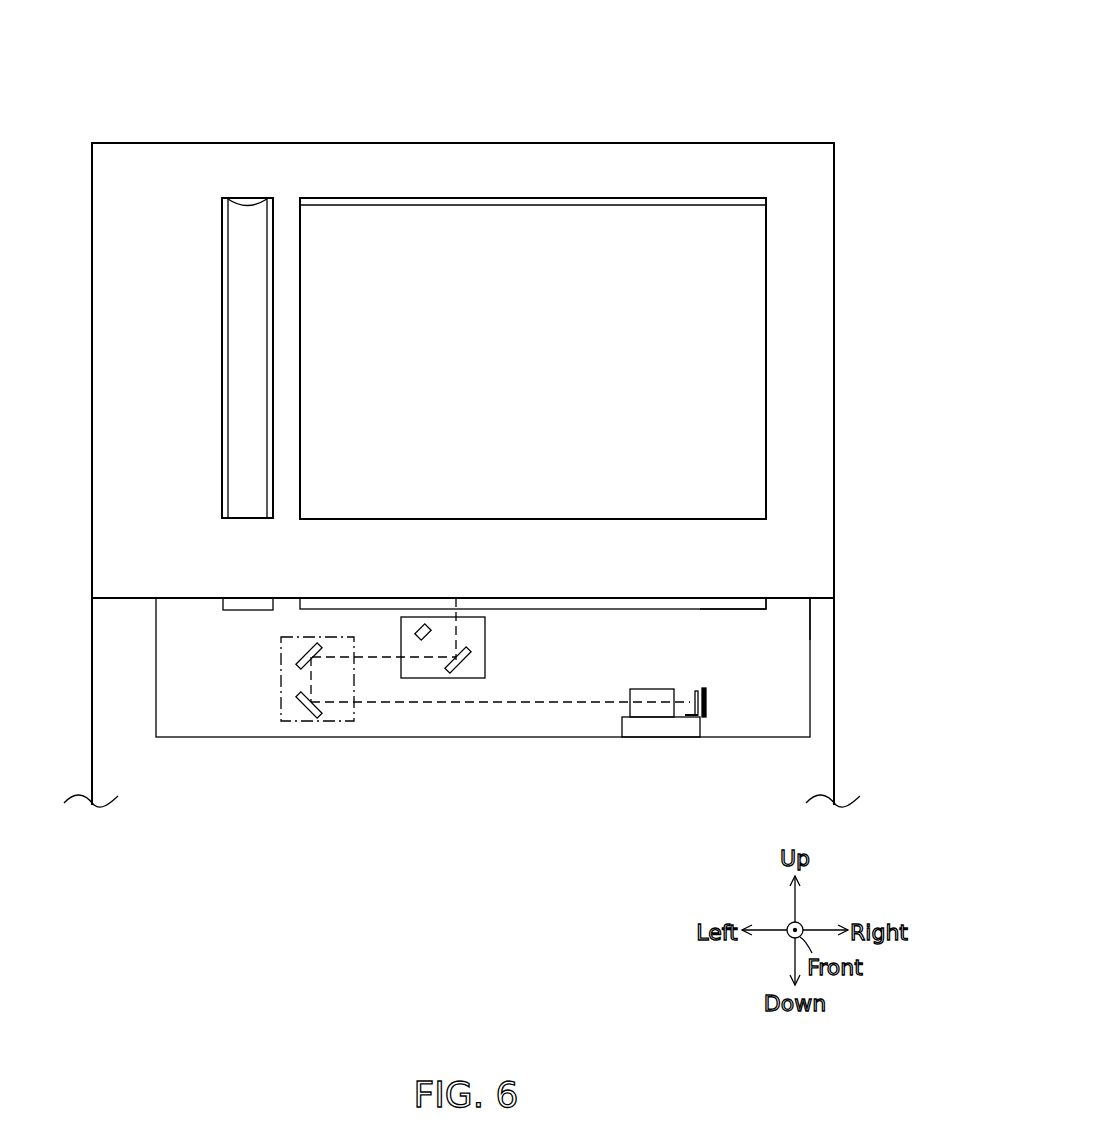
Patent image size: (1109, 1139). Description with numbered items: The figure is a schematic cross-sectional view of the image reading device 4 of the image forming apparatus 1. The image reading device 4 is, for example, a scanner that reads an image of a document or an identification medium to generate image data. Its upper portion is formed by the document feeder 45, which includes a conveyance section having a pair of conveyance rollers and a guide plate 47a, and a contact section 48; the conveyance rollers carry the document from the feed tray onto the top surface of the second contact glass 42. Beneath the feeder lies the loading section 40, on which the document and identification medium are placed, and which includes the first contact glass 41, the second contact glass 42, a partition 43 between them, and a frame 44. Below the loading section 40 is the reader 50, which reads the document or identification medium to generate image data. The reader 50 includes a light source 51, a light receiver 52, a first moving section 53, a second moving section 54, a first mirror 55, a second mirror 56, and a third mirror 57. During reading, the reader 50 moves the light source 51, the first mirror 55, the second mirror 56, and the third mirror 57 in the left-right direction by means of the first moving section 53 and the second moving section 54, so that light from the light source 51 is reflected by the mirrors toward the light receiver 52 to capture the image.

The image forming apparatus 1 is at (838, 98).
The image reading device 4 is at (855, 605).
The loading section 40 is at (665, 585).
The first contact glass 41 is at (748, 603).
The second contact glass 42 is at (238, 603).
The partition 43 is at (287, 603).
The frame 44 is at (796, 606).
The document feeder 45 is at (846, 362).
The guide plate 47a is at (248, 265).
The contact section 48 is at (748, 293).
The reader 50 is at (544, 765).
The light source 51 is at (457, 598).
The light receiver 52 is at (712, 708).
The first moving section 53 is at (440, 678).
The second moving section 54 is at (291, 722).
The first mirror 55 is at (468, 657).
The second mirror 56 is at (316, 654).
The third mirror 57 is at (307, 712).